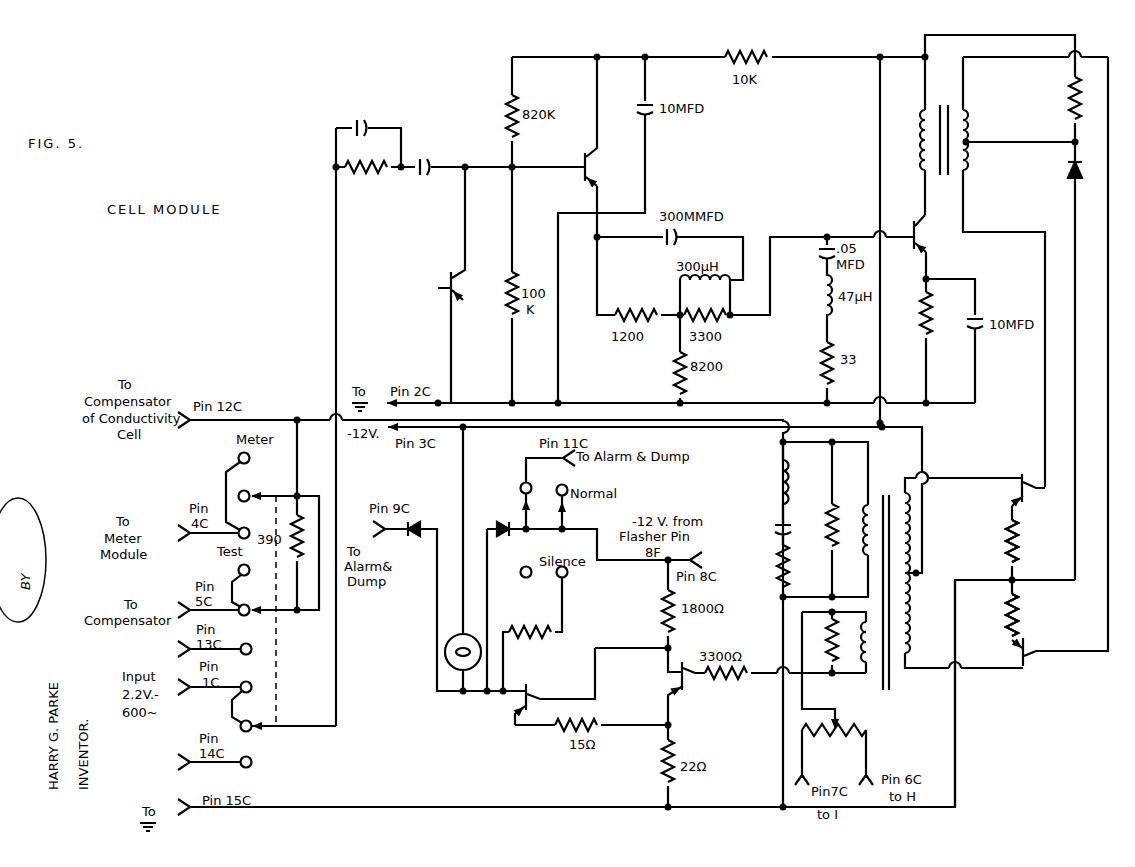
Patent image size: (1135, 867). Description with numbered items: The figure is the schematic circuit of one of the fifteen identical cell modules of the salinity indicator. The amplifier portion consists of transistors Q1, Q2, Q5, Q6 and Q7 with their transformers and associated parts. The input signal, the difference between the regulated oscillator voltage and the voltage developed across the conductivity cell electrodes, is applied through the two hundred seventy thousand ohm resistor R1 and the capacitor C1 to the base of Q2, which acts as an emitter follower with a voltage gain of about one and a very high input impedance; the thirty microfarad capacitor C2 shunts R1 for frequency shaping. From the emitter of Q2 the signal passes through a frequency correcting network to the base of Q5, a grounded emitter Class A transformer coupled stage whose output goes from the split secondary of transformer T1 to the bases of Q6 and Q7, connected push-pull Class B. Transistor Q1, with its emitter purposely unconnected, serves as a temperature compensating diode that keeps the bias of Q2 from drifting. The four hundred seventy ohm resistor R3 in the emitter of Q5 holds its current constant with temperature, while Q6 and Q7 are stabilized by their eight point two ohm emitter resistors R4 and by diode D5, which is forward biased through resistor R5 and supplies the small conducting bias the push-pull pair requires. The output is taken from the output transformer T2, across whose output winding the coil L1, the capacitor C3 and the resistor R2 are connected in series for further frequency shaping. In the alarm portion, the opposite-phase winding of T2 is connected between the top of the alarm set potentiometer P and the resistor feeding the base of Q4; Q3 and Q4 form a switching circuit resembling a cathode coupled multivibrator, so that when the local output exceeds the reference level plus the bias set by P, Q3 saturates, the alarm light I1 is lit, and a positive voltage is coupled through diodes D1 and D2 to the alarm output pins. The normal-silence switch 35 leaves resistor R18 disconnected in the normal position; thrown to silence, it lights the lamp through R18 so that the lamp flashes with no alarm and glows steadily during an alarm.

The normal-silence switch 35 is at (594, 512).
The transistor Q1 is at (453, 294).
The transistor Q2 is at (581, 180).
The transistor Q3 is at (512, 698).
The transistor Q4 is at (670, 674).
The transistor Q5 is at (922, 228).
The transistor Q6 is at (1026, 478).
The transistor Q7 is at (1030, 660).
The 270,000 ohm resistor R1 is at (386, 159).
The resistor R2 is at (800, 582).
The 470 ohm resistor R3 is at (946, 334).
The 8.2 ohm emitter resistors R4 is at (1007, 560).
The resistor R5 is at (1086, 108).
The resistor R18 is at (522, 641).
The capacitor C1 is at (434, 160).
The 30 microfarad capacitor C2 is at (362, 122).
The .2 microfarad capacitor C3 is at (798, 536).
The diode D1 is at (419, 526).
The diode D2 is at (496, 524).
The diode D5 is at (1066, 169).
The transformer T1 is at (954, 108).
The output transformer T2 is at (878, 673).
The coil L1 is at (812, 494).
The alarm light I1 is at (460, 634).
The alarm set potentiometer P is at (834, 698).